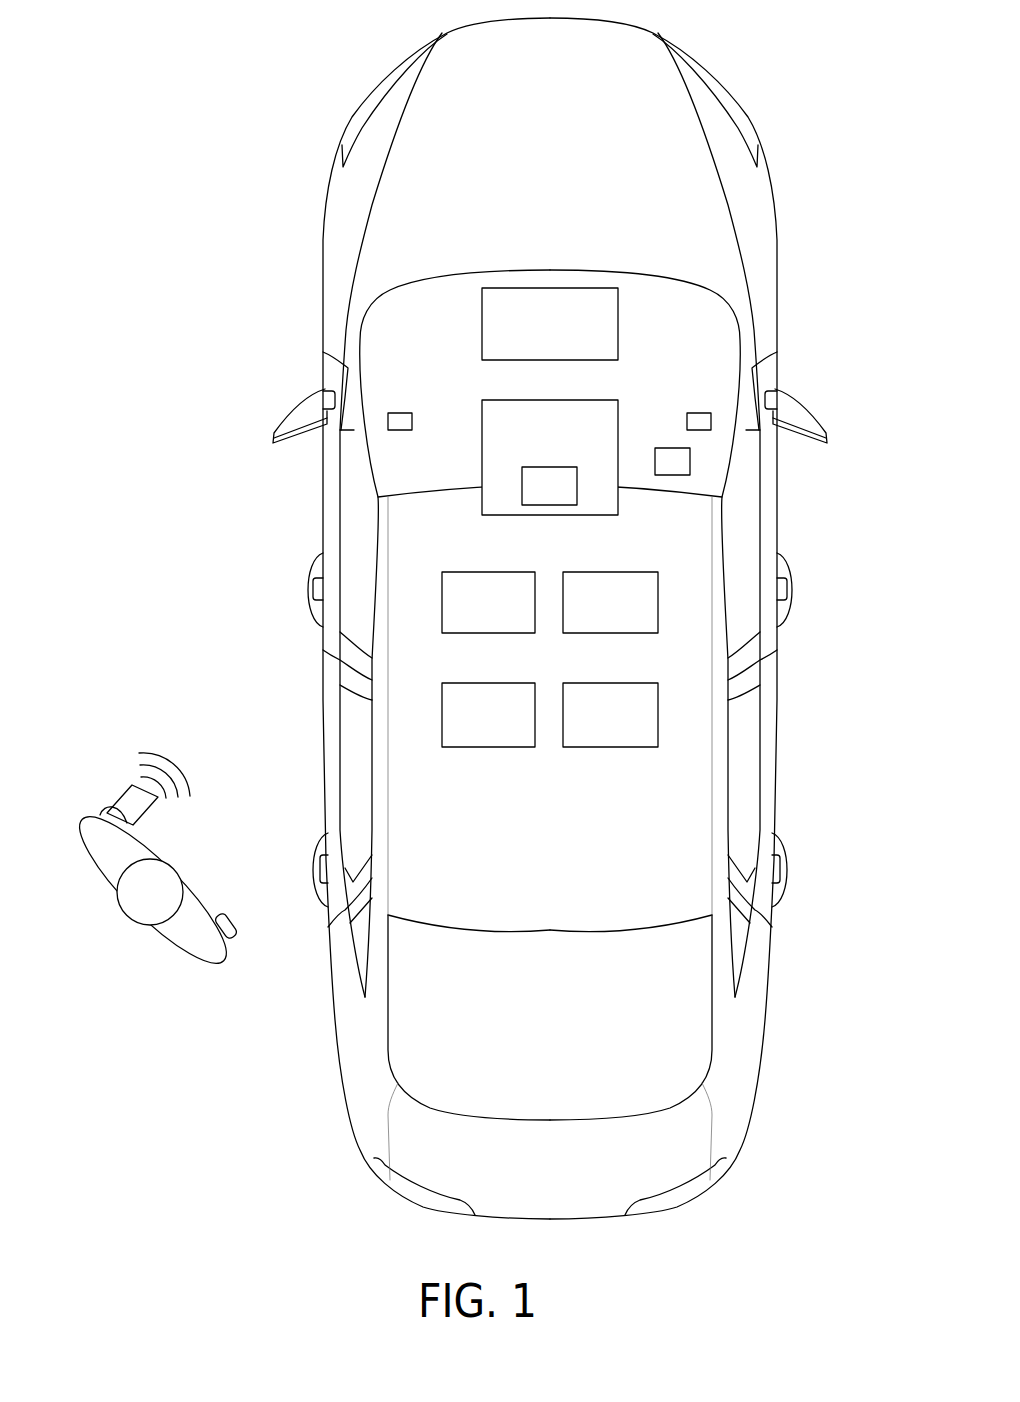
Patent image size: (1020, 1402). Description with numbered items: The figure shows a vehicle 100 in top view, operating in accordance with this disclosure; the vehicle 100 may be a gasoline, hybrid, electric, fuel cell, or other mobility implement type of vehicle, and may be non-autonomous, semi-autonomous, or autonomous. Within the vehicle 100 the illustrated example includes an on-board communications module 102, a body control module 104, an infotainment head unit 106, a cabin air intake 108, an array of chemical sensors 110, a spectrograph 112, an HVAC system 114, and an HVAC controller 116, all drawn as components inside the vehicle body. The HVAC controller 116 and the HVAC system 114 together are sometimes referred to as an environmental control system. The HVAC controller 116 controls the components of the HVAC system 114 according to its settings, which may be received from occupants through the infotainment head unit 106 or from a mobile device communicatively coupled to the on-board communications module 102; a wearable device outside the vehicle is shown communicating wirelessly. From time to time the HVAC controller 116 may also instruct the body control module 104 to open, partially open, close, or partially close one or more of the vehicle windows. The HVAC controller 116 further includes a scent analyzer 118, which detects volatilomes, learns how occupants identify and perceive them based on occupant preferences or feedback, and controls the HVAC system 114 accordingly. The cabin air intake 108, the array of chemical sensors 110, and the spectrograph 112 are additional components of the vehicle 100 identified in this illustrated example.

The vehicle 100 is at (777, 217).
The on-board communications module 102 is at (463, 572).
The body control module 104 is at (633, 572).
The infotainment head unit 106 is at (490, 747).
The cabin air intake 108 is at (400, 412).
The array of chemical sensors 110 is at (690, 460).
The spectrograph 112 is at (608, 747).
The HVAC system 114 is at (618, 325).
The HVAC controller 116 is at (482, 440).
The scent analyzer 118 is at (549, 486).